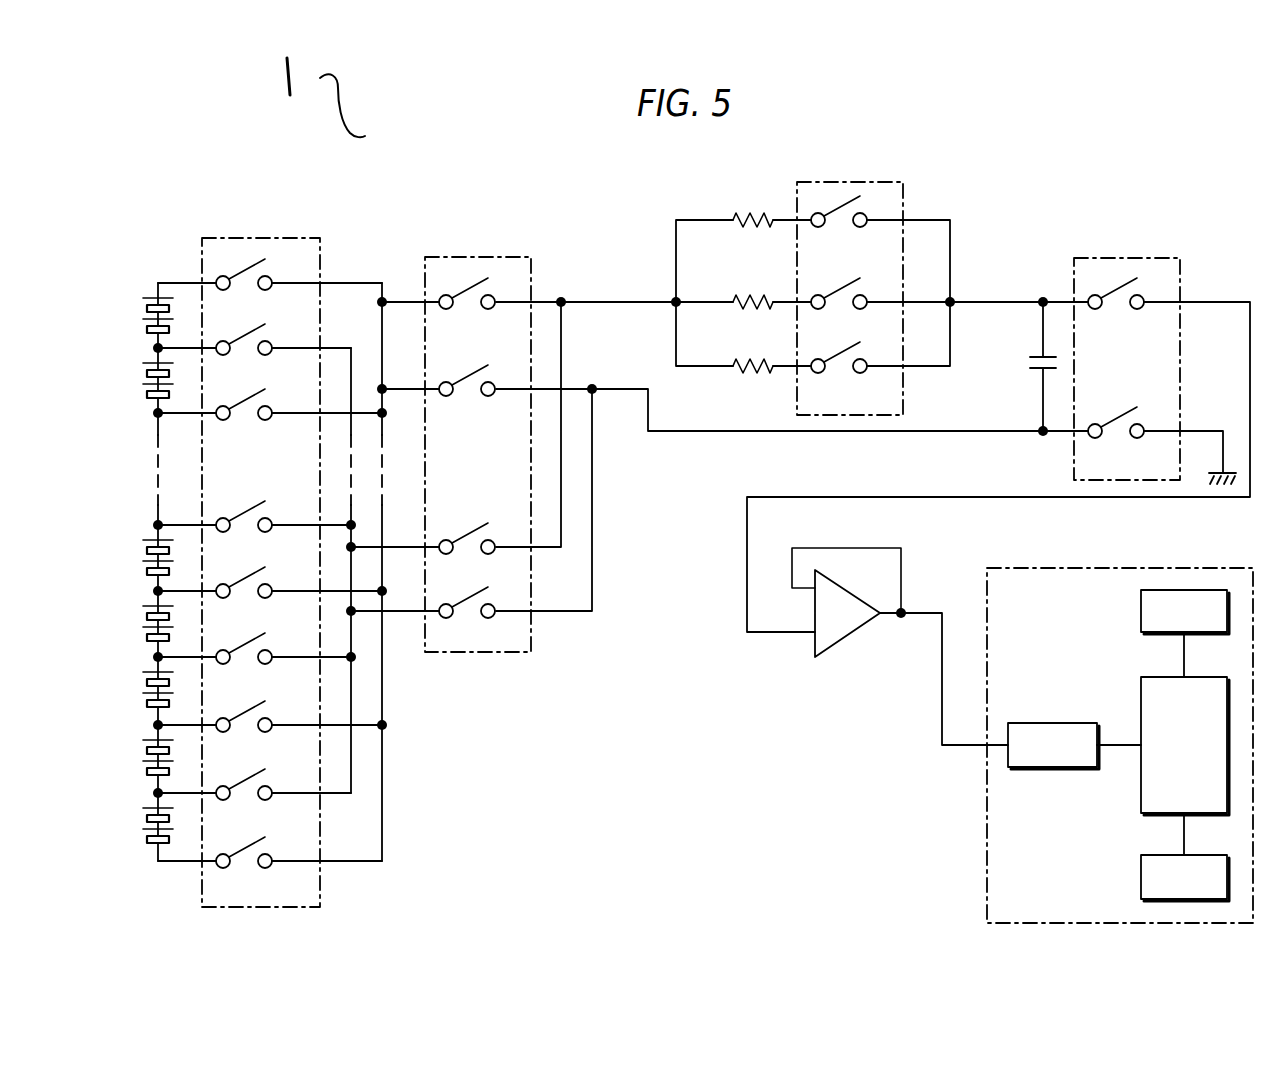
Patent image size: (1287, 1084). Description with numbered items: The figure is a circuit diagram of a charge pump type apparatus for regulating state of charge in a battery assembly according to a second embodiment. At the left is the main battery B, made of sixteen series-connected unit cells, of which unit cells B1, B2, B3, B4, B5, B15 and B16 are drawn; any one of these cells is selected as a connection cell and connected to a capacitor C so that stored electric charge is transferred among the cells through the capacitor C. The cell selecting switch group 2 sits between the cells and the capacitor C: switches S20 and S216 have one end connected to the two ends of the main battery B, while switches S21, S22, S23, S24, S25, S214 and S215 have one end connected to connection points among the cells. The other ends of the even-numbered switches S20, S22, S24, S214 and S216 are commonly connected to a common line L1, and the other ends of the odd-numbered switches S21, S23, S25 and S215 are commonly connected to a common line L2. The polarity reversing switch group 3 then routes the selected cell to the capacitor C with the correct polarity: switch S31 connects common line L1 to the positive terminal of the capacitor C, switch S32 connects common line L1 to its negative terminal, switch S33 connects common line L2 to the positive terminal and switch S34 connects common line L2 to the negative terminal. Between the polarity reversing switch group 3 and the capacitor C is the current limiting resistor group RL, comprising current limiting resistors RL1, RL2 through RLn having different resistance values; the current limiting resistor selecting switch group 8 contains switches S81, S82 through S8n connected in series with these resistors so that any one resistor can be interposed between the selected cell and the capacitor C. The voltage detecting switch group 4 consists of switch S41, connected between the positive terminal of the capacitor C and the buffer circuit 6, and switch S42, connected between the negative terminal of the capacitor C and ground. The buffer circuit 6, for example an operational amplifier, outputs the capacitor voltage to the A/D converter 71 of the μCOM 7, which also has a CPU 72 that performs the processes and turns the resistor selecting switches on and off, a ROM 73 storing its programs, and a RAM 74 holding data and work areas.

The main battery B is at (131, 262).
The unit cell B1 is at (143, 824).
The unit cell B2 is at (143, 756).
The unit cell B3 is at (143, 688).
The unit cell B4 is at (143, 622).
The unit cell B5 is at (143, 556).
The unit cell B15 is at (143, 379).
The unit cell B16 is at (143, 314).
The cell selecting switch group 2 is at (257, 238).
The switch S20 is at (225, 868).
The switch S21 is at (225, 800).
The switch S22 is at (225, 732).
The switch S23 is at (225, 664).
The switch S24 is at (225, 598).
The switch S25 is at (225, 532).
The switch S214 is at (225, 420).
The switch S215 is at (225, 355).
The switch S216 is at (225, 290).
The common line L1 is at (383, 816).
The common line L2 is at (353, 770).
The polarity reversing switch group 3 is at (470, 255).
The switch S31 is at (448, 309).
The switch S32 is at (448, 396).
The switch S33 is at (448, 554).
The switch S34 is at (448, 618).
The current limiting resistor group RL is at (732, 274).
The current limiting resistor RL1 is at (748, 378).
The current limiting resistor RL2 is at (748, 315).
The current limiting resistor RLn is at (748, 233).
The current limiting resistor selecting switch group 8 is at (849, 182).
The switch S81 is at (820, 373).
The switch S82 is at (820, 309).
The switch S8n is at (820, 227).
The capacitor C is at (1028, 364).
The voltage detecting switch group 4 is at (1125, 258).
The switch S41 is at (1097, 309).
The switch S42 is at (1097, 438).
The buffer circuit 6 is at (843, 642).
The μCOM 7 is at (1207, 568).
The A/D converter 71 is at (1035, 722).
The CPU 72 is at (1141, 700).
The ROM 73 is at (1141, 622).
The RAM 74 is at (1141, 865).